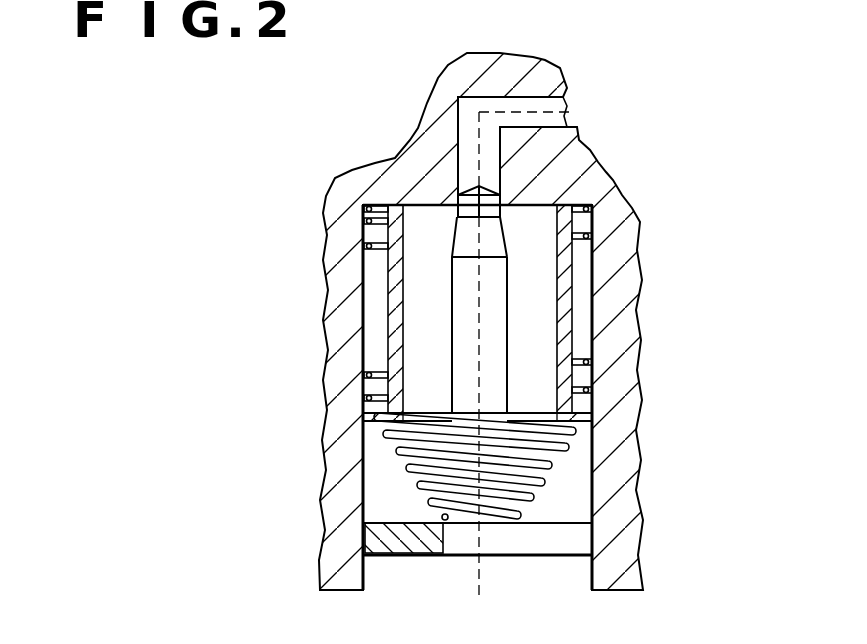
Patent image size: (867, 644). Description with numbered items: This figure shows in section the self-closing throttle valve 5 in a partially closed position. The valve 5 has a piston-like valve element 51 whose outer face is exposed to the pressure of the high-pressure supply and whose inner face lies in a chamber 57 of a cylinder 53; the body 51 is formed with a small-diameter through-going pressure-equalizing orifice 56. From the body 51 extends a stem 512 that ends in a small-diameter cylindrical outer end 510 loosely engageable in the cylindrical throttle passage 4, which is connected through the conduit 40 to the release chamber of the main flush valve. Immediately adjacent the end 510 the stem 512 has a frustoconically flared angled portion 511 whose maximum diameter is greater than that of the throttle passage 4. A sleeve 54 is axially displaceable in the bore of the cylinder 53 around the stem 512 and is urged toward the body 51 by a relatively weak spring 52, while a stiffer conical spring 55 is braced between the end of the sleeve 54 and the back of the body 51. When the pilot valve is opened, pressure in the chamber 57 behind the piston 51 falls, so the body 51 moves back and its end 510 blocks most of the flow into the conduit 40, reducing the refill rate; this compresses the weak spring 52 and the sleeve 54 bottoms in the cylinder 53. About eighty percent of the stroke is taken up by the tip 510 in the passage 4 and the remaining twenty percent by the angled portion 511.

The throttle passage 4 is at (457, 134).
The self-closing throttle valve 5 is at (483, 384).
The conduit 40 is at (543, 97).
The valve element 51 is at (545, 540).
The weak spring 52 is at (365, 220).
The cylinder 53 is at (367, 578).
The sleeve 54 is at (395, 283).
The conical spring 55 is at (545, 467).
The pressure-equalizing orifice 56 is at (392, 522).
The chamber 57 is at (560, 498).
The cylindrical outer end 510 is at (533, 197).
The angled portion 511 is at (476, 237).
The stem 512 is at (457, 347).